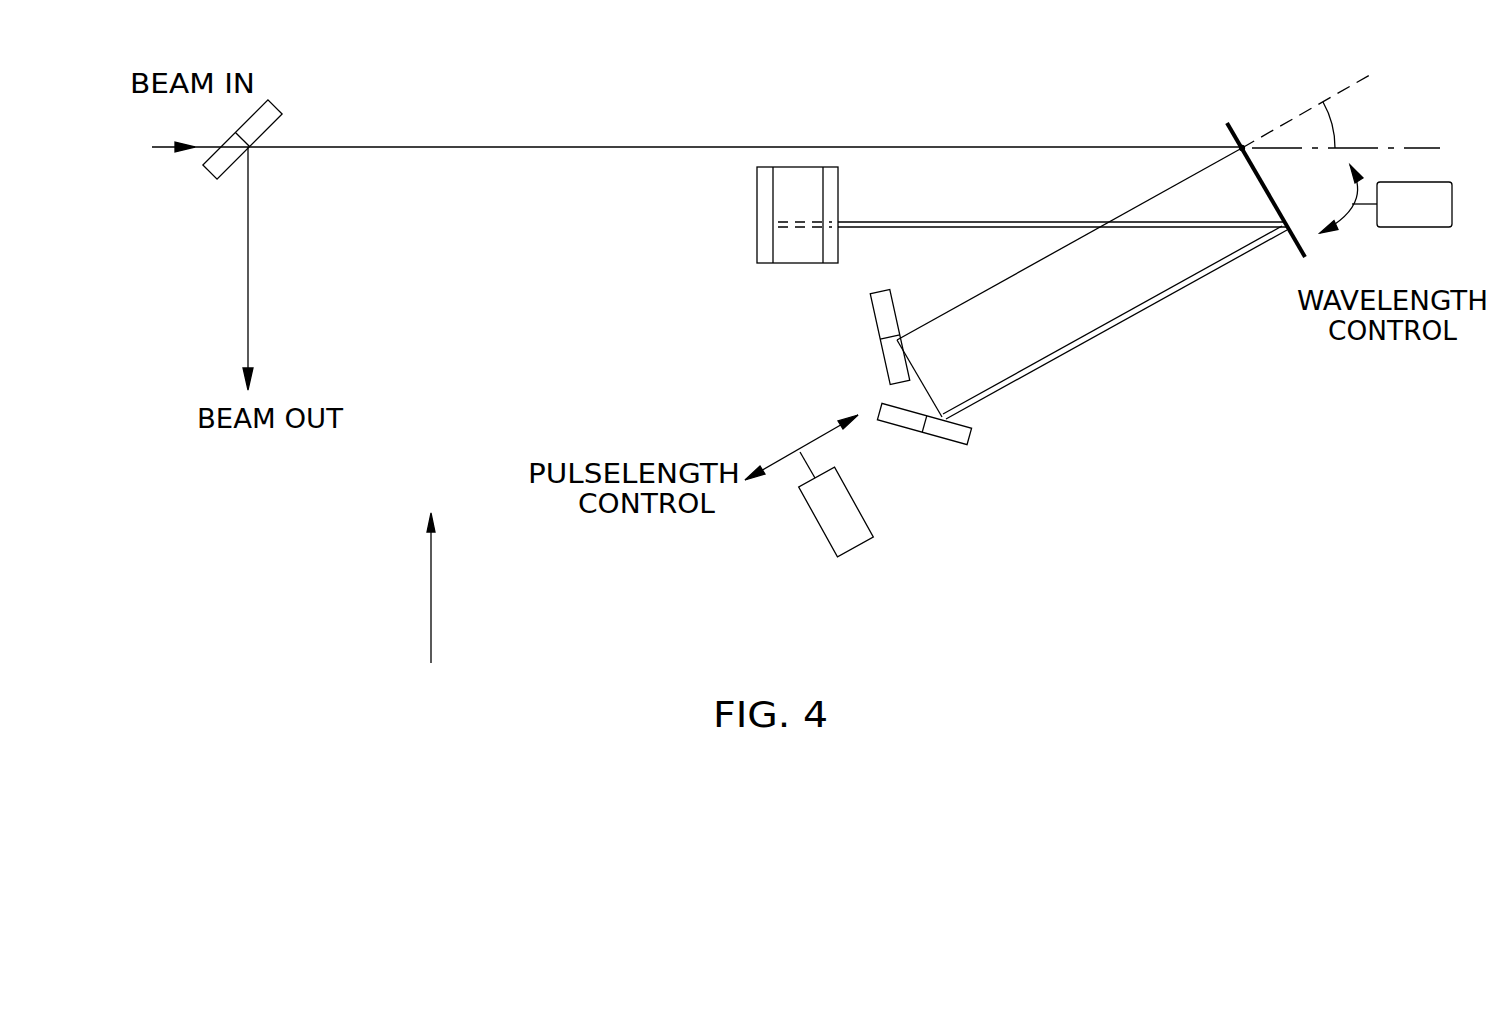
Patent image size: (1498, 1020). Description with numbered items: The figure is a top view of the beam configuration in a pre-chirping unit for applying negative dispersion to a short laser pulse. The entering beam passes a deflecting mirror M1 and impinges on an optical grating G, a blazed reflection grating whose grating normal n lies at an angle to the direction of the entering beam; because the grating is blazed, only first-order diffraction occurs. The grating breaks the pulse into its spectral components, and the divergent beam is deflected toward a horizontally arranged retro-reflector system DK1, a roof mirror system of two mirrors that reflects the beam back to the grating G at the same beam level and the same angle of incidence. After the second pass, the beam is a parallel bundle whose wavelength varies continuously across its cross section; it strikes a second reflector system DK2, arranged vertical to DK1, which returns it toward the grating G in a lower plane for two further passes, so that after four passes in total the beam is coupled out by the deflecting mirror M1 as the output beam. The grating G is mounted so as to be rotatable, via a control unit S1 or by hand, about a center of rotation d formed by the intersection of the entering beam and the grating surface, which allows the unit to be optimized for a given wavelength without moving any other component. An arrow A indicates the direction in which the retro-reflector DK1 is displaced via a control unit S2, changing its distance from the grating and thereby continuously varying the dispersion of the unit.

The deflecting mirror M1 is at (224, 165).
The second reflector system DK2 is at (757, 215).
The retro-reflector system DK1 is at (936, 438).
The optical grating G is at (1232, 122).
The center of rotation d is at (1245, 146).
The grating normal n is at (1340, 88).
The control unit S1 is at (1450, 228).
The control unit S2 is at (865, 543).
The direction arrow A is at (452, 588).